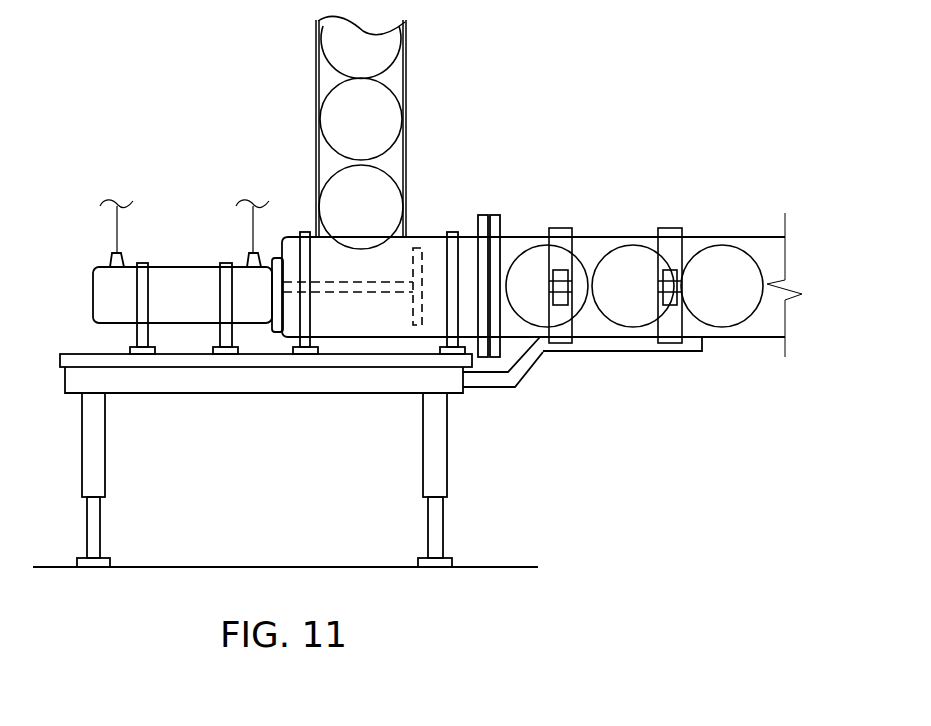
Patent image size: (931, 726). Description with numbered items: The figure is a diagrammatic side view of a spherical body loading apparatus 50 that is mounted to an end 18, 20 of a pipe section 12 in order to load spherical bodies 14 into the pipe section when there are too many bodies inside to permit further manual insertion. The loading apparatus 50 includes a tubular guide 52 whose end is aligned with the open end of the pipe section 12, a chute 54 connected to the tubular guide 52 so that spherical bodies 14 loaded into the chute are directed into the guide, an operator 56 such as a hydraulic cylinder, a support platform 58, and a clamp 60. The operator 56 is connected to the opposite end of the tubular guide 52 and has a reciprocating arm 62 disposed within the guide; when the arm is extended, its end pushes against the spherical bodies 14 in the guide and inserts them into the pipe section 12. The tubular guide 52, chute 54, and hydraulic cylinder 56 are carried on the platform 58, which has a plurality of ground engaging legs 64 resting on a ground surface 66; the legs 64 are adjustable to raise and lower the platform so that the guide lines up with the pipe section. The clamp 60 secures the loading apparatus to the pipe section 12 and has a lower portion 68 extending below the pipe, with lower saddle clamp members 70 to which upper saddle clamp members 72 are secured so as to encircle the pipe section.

The spherical body loading apparatus 50 is at (172, 111).
The pipe section 12 is at (767, 332).
The spherical bodies 14 is at (342, 62).
The end of the pipe section 18 is at (631, 230).
The end of the pipe section 20 is at (588, 237).
The tubular guide 52 is at (408, 237).
The chute 54 is at (407, 73).
The operator 56 is at (177, 276).
The support platform 58 is at (257, 386).
The clamp 60 is at (517, 380).
The reciprocating arm 62 is at (360, 294).
The ground engaging legs 64 is at (98, 524).
The ground surface 66 is at (307, 566).
The lower portion 68 is at (622, 348).
The lower saddle clamp members 70 is at (565, 335).
The upper saddle clamp members 72 is at (562, 233).